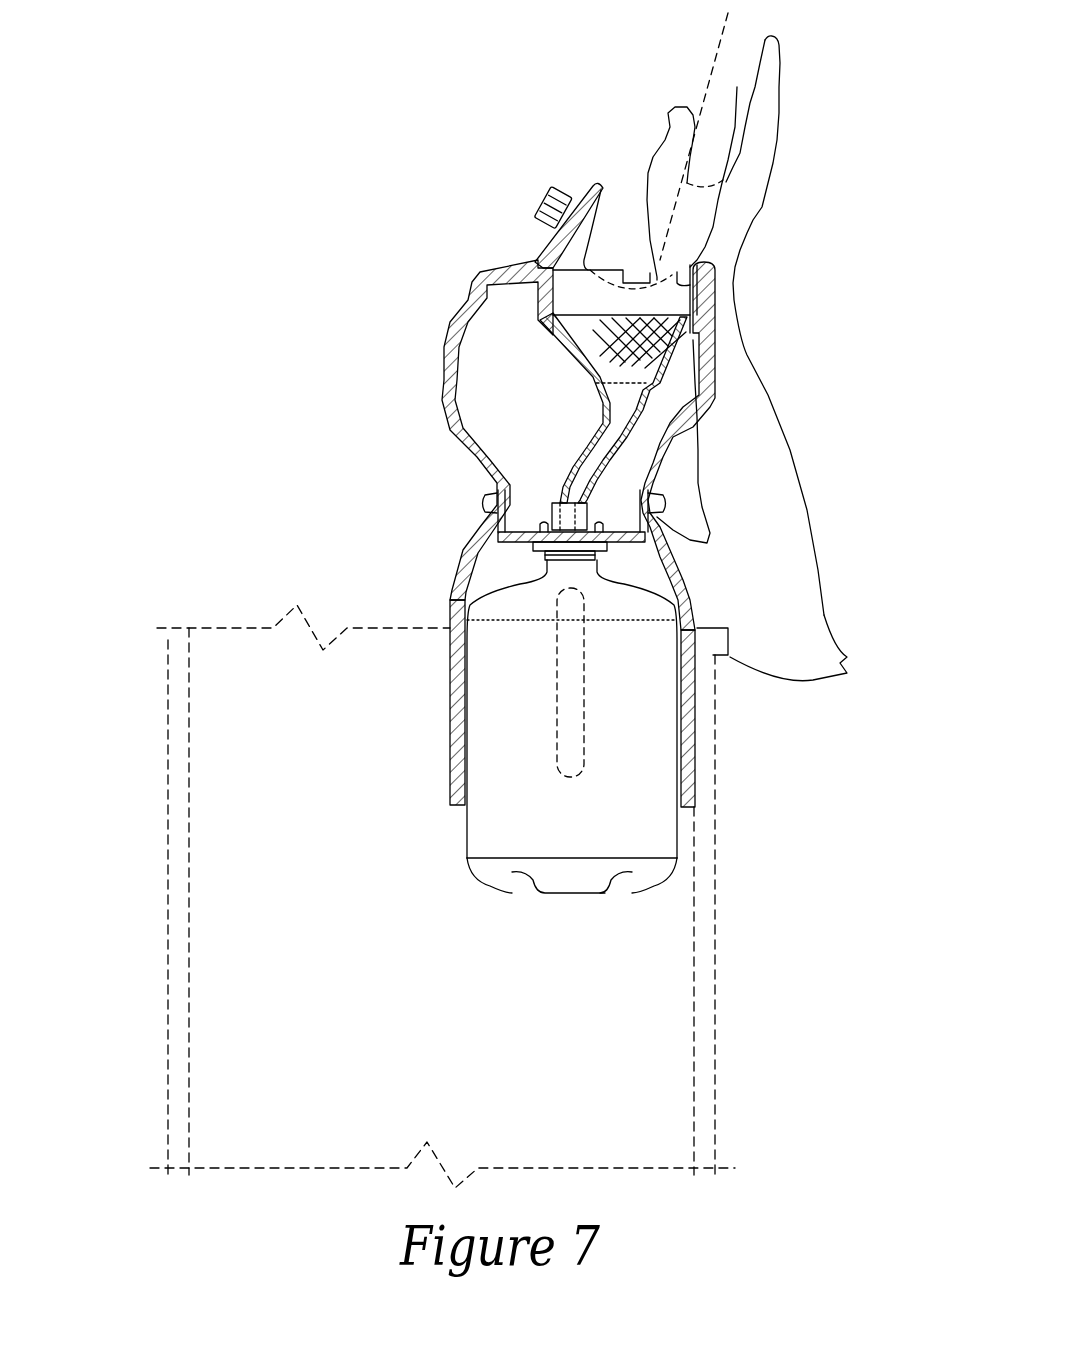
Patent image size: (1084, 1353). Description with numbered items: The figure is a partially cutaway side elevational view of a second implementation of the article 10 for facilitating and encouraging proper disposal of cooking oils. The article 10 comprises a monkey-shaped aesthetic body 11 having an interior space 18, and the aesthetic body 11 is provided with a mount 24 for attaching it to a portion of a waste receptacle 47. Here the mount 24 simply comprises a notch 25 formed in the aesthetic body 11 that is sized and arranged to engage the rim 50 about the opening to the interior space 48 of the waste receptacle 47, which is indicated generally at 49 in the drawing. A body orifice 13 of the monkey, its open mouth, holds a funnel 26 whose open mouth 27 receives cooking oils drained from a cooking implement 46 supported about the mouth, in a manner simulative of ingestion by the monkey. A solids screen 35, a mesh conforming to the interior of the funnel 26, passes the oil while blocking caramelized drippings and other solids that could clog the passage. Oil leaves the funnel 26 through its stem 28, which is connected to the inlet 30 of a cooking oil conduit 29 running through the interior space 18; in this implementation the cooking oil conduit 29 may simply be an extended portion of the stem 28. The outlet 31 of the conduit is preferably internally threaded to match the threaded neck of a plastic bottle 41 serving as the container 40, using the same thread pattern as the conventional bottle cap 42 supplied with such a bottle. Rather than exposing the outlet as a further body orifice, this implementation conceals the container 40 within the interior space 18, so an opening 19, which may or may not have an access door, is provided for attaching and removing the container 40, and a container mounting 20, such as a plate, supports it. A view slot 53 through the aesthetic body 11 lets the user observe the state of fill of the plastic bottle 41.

The article for facilitating and encouraging proper disposal of cooking oils 10 is at (252, 283).
The aesthetic body 11 is at (693, 789).
The body orifice 13 is at (627, 205).
The interior space 18 is at (465, 575).
The opening 19 is at (452, 828).
The container mounting 20 is at (467, 553).
The mount 24 is at (747, 622).
The notch 25 is at (708, 648).
The funnel 26 is at (573, 302).
The open mouth of the funnel 27 is at (637, 133).
The stem 28 is at (607, 393).
The cooking oil conduit 29 is at (613, 463).
The inlet 30 is at (602, 405).
The outlet 31 is at (570, 513).
The solids screen 35 is at (655, 362).
The container 40 is at (513, 838).
The plastic bottle 41 is at (592, 838).
The bottle cap 42 is at (540, 207).
The cooking implement 46 is at (737, 89).
The waste receptacle 47 is at (548, 1087).
The interior space of the waste receptacle 48 is at (258, 667).
The bag top 49 is at (282, 552).
The rim 50 is at (170, 642).
The view slot 53 is at (458, 695).